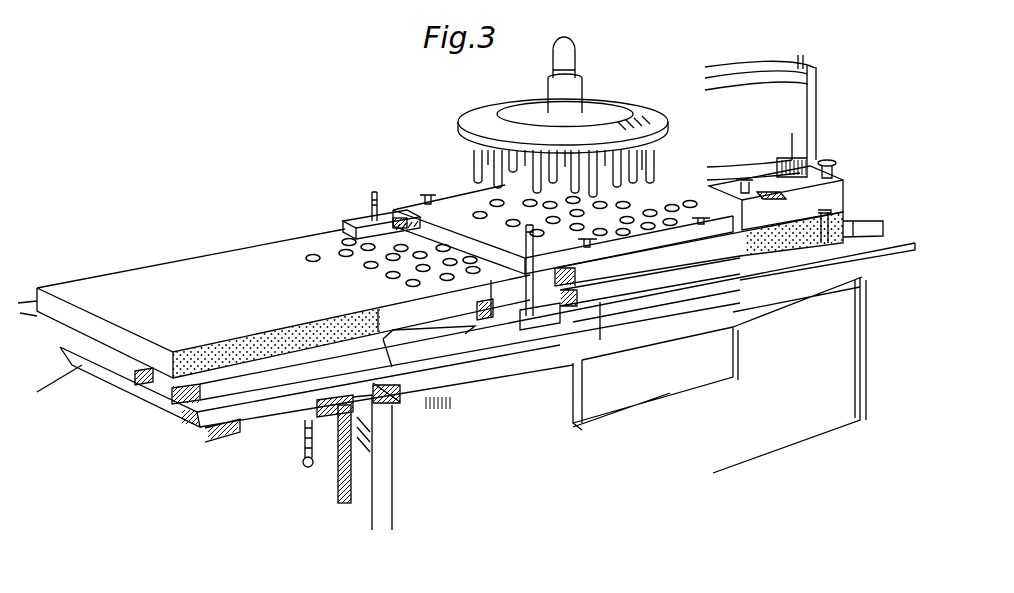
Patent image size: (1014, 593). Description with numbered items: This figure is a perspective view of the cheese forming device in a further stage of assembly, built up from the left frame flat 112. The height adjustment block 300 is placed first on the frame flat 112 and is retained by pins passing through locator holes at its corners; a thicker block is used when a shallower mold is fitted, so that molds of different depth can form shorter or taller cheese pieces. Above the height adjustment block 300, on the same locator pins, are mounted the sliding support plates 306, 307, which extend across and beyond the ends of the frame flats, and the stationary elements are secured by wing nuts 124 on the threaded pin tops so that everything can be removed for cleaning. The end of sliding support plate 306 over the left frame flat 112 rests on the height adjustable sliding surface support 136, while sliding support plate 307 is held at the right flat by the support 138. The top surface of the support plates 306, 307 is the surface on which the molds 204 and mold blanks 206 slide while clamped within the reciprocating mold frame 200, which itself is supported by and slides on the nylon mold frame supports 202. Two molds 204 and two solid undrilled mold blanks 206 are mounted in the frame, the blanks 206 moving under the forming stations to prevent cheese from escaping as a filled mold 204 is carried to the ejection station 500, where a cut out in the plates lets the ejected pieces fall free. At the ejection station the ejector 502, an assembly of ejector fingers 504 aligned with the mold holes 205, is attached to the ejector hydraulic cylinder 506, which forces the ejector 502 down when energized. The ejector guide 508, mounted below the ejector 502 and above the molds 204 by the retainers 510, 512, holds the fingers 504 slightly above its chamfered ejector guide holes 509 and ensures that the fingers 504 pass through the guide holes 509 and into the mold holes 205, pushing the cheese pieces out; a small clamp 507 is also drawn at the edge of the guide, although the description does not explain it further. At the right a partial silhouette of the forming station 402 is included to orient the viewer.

The frame flat 112 is at (372, 395).
The wing nuts 124 is at (827, 160).
The height adjustable sliding surface support 136 is at (263, 430).
The support 138 is at (878, 275).
The mold frame 200 is at (37, 392).
The nylon mold frame supports 202 is at (463, 340).
The molds 204 is at (250, 255).
The mold holes 205 is at (312, 256).
The mold blanks 206 is at (53, 290).
The height adjustment block 300 is at (408, 390).
The sliding support plate 306 is at (197, 430).
The sliding support plate 307 is at (692, 305).
The forming station 402 is at (745, 125).
The ejection station 500 is at (472, 185).
The ejector 502 is at (482, 122).
The ejector fingers 504 is at (652, 165).
The ejector hydraulic cylinder 506 is at (576, 65).
The clamp 507 is at (398, 218).
The ejector guide 508 is at (369, 216).
The ejector guide holes 509 is at (426, 195).
The ejector guide retainer 510 is at (362, 218).
The ejector guide retainer 512 is at (603, 272).